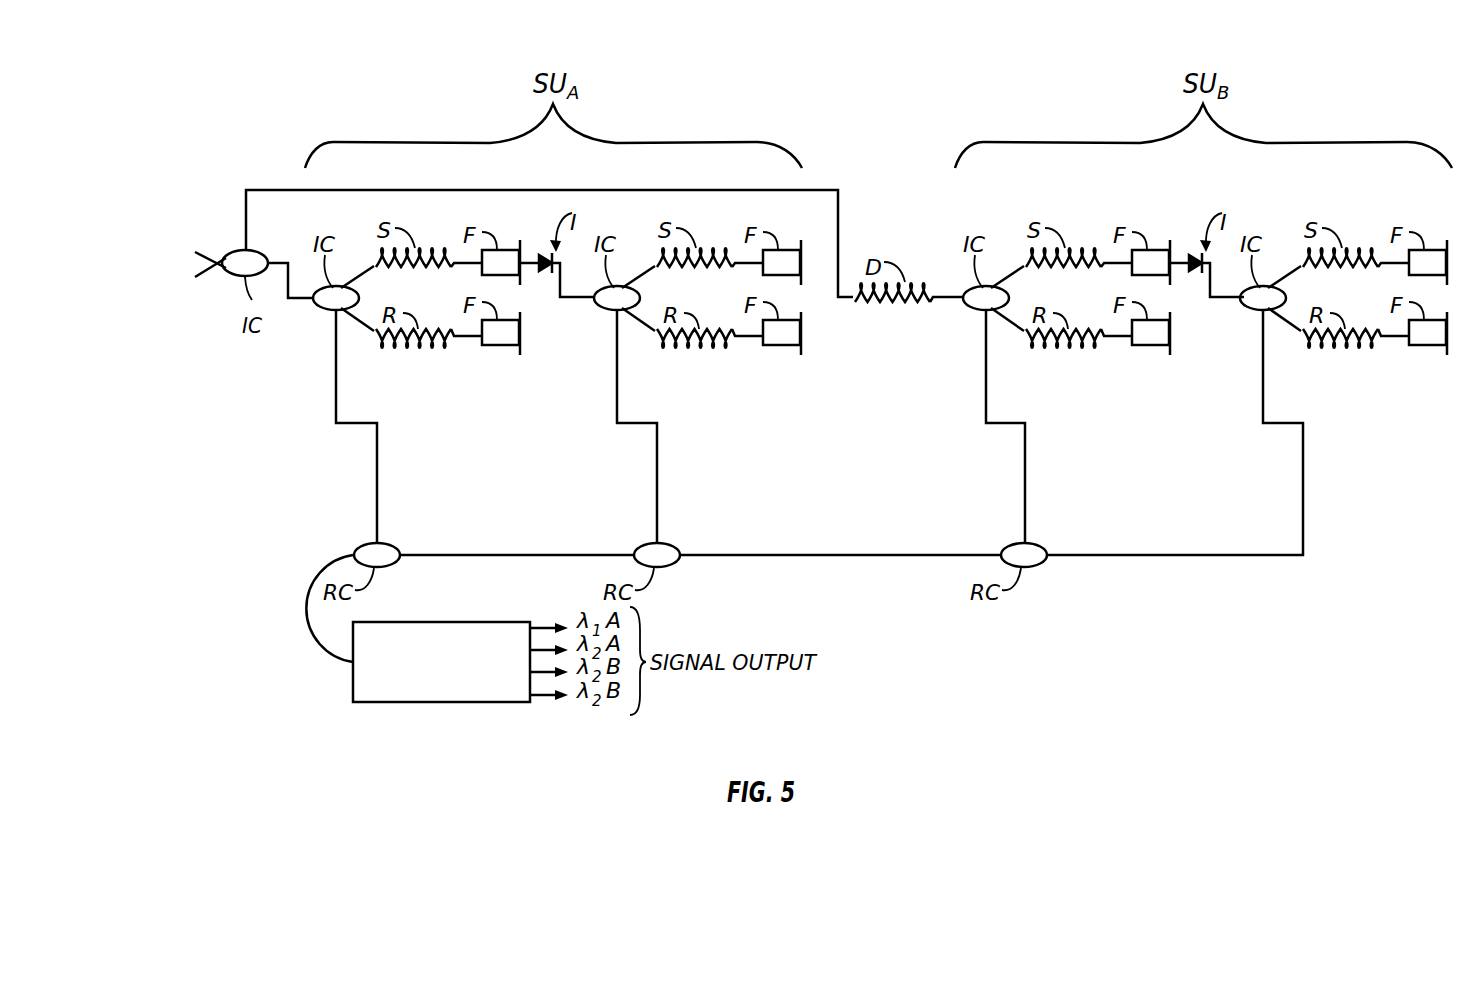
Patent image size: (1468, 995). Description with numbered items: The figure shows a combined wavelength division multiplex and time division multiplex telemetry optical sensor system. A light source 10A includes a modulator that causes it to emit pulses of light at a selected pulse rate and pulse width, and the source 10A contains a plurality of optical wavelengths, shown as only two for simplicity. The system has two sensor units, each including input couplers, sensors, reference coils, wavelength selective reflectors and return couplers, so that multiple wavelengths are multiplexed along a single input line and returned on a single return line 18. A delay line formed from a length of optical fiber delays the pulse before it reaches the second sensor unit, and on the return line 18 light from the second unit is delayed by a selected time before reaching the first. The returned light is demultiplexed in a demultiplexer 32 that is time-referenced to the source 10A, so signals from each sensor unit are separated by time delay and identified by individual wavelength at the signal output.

The light source 10A is at (152, 212).
The return line 18 is at (297, 608).
The demultiplexer 32 is at (375, 704).